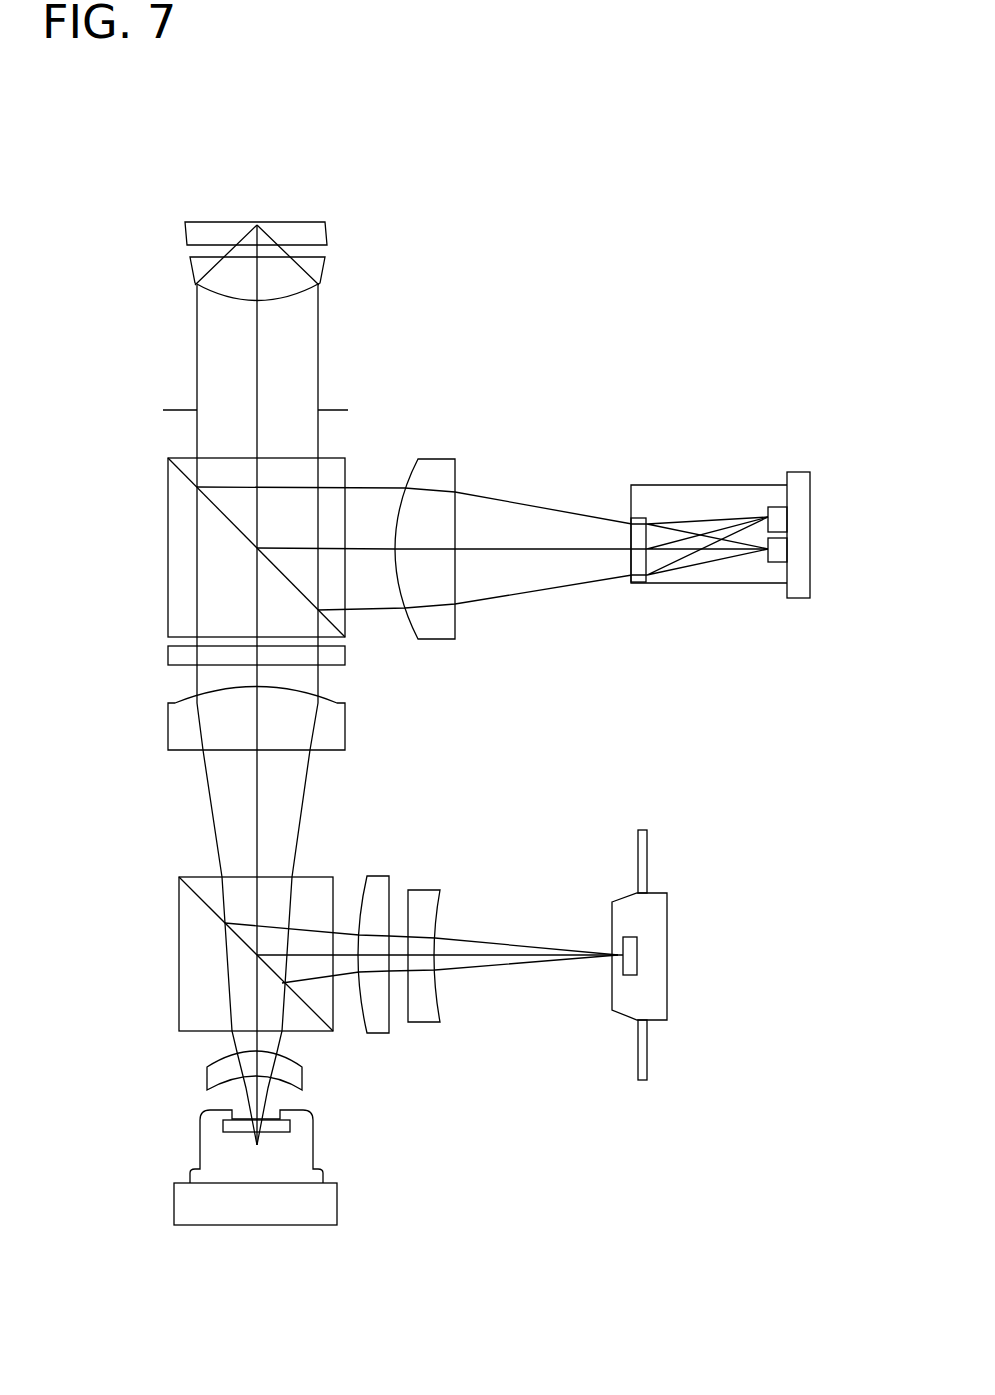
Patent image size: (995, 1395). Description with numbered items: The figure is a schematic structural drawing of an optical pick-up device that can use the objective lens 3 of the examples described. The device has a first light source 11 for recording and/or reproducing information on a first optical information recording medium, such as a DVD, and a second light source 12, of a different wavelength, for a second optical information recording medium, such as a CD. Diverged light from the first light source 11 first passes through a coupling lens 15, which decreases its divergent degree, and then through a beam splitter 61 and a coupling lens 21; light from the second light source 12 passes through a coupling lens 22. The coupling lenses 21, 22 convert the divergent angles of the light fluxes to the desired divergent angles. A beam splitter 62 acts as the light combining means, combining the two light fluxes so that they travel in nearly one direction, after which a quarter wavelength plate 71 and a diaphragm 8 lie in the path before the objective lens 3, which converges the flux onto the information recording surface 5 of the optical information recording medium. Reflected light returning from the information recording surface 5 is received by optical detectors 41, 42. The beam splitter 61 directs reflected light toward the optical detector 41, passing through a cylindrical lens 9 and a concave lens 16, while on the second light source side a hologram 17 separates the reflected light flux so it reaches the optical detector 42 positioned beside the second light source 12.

The objective lens 3 is at (361, 271).
The information recording surface 5 is at (287, 222).
The diaphragm 8 is at (333, 406).
The beam splitter 62 is at (178, 547).
The quarter wavelength plate 71 is at (173, 656).
The coupling lens 21 is at (178, 727).
The coupling lens 22 is at (437, 478).
The hologram 17 is at (641, 583).
The optical detector 42 is at (780, 518).
The second light source 12 is at (780, 560).
The beam splitter 61 is at (178, 905).
The cylindrical lens 9 is at (378, 886).
The concave lens 16 is at (424, 900).
The optical detector 41 is at (653, 913).
The coupling lens 15 is at (207, 1080).
The first light source 11 is at (187, 1207).